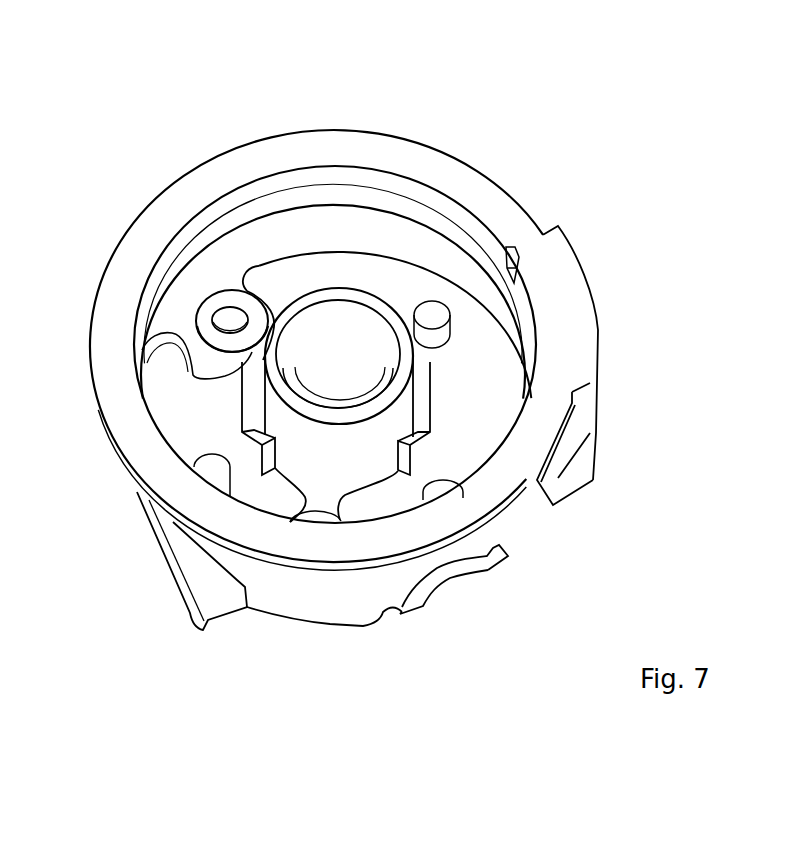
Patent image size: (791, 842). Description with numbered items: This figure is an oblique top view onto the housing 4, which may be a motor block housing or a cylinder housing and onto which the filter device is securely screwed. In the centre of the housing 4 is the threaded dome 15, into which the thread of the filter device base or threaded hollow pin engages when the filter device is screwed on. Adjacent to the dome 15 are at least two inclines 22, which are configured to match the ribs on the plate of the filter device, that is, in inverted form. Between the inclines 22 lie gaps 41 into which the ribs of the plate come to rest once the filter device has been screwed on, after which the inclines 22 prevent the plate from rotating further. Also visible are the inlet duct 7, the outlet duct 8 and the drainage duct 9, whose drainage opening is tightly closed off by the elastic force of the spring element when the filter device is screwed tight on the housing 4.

The housing 4 is at (539, 157).
The inlet duct 7 is at (312, 517).
The outlet duct 8 is at (335, 338).
The drainage duct 9 is at (229, 320).
The dome 15 is at (303, 302).
The incline 22 is at (250, 400).
The gap 41 is at (380, 483).